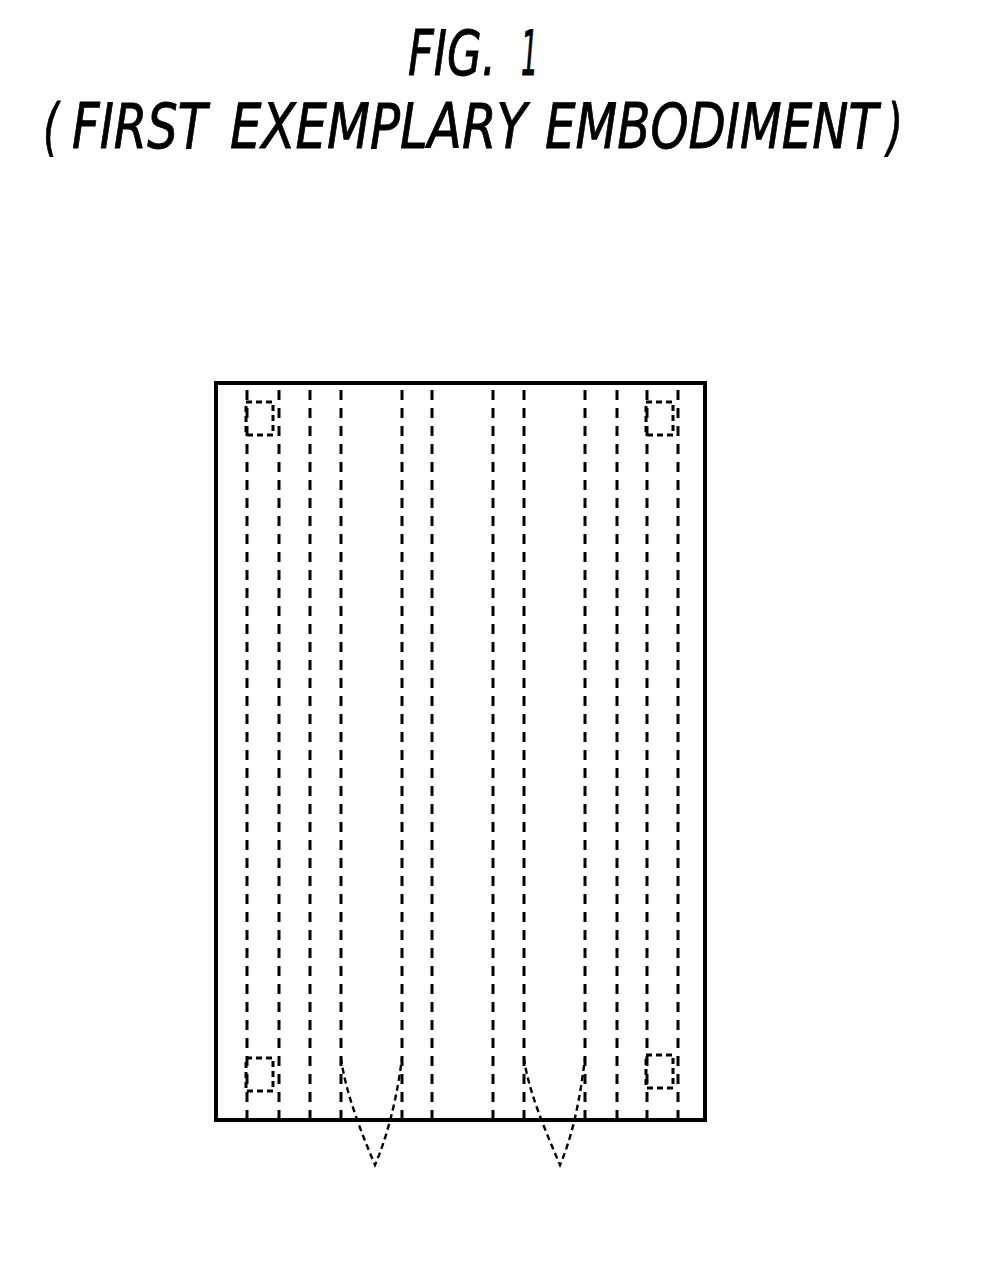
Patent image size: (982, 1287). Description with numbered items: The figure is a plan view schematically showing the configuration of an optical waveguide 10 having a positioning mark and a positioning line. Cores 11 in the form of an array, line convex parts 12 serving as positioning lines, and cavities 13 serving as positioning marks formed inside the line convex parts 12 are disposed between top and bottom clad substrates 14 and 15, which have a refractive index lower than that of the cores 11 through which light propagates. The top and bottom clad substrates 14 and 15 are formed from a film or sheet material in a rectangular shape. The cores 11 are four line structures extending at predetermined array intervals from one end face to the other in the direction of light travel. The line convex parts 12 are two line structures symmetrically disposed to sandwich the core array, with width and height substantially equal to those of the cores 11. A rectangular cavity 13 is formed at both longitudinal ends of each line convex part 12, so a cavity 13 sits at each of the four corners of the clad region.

The optical waveguide 10 is at (698, 345).
The cores 11 is at (463, 1131).
The line convex parts 12 is at (680, 725).
The cavities 13 is at (252, 418).
The top clad substrate 14 is at (525, 751).
The bottom clad substrate 15 is at (697, 547).